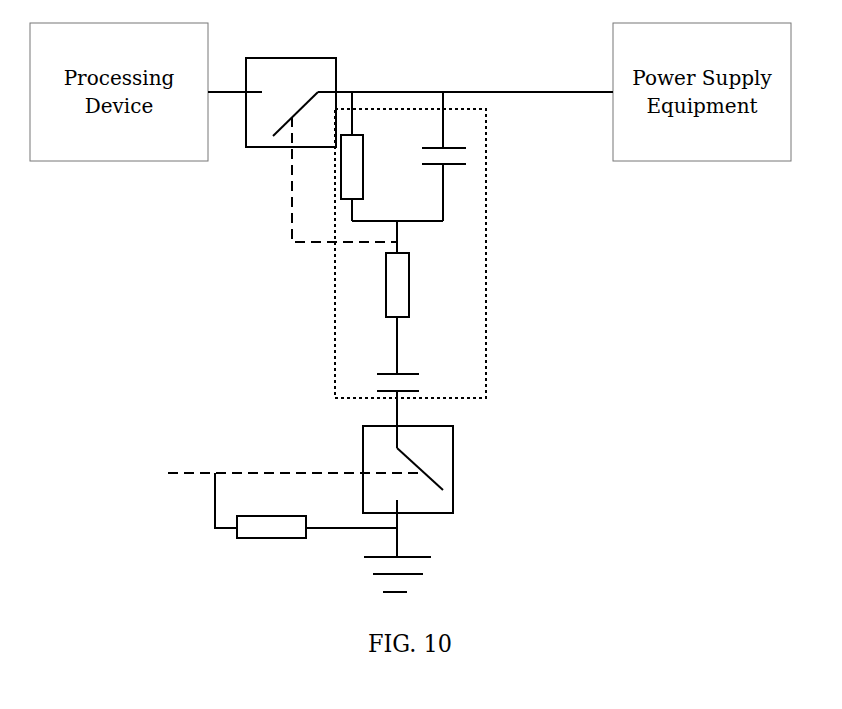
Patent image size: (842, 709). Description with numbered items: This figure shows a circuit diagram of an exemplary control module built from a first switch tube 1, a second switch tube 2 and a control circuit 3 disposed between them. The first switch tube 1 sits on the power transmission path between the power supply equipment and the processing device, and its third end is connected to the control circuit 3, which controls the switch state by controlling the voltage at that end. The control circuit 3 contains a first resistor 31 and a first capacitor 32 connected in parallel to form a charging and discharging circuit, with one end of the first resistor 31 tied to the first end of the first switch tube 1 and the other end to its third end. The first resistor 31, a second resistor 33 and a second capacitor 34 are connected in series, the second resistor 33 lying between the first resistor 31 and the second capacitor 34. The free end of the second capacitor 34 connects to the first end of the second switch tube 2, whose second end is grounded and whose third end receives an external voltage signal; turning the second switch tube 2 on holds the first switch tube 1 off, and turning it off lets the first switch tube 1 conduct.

The first switch tube 1 is at (282, 57).
The second switch tube 2 is at (453, 462).
The control circuit 3 is at (486, 200).
The first resistor 31 is at (363, 164).
The first capacitor 32 is at (443, 148).
The second resistor 33 is at (409, 291).
The second capacitor 34 is at (403, 374).